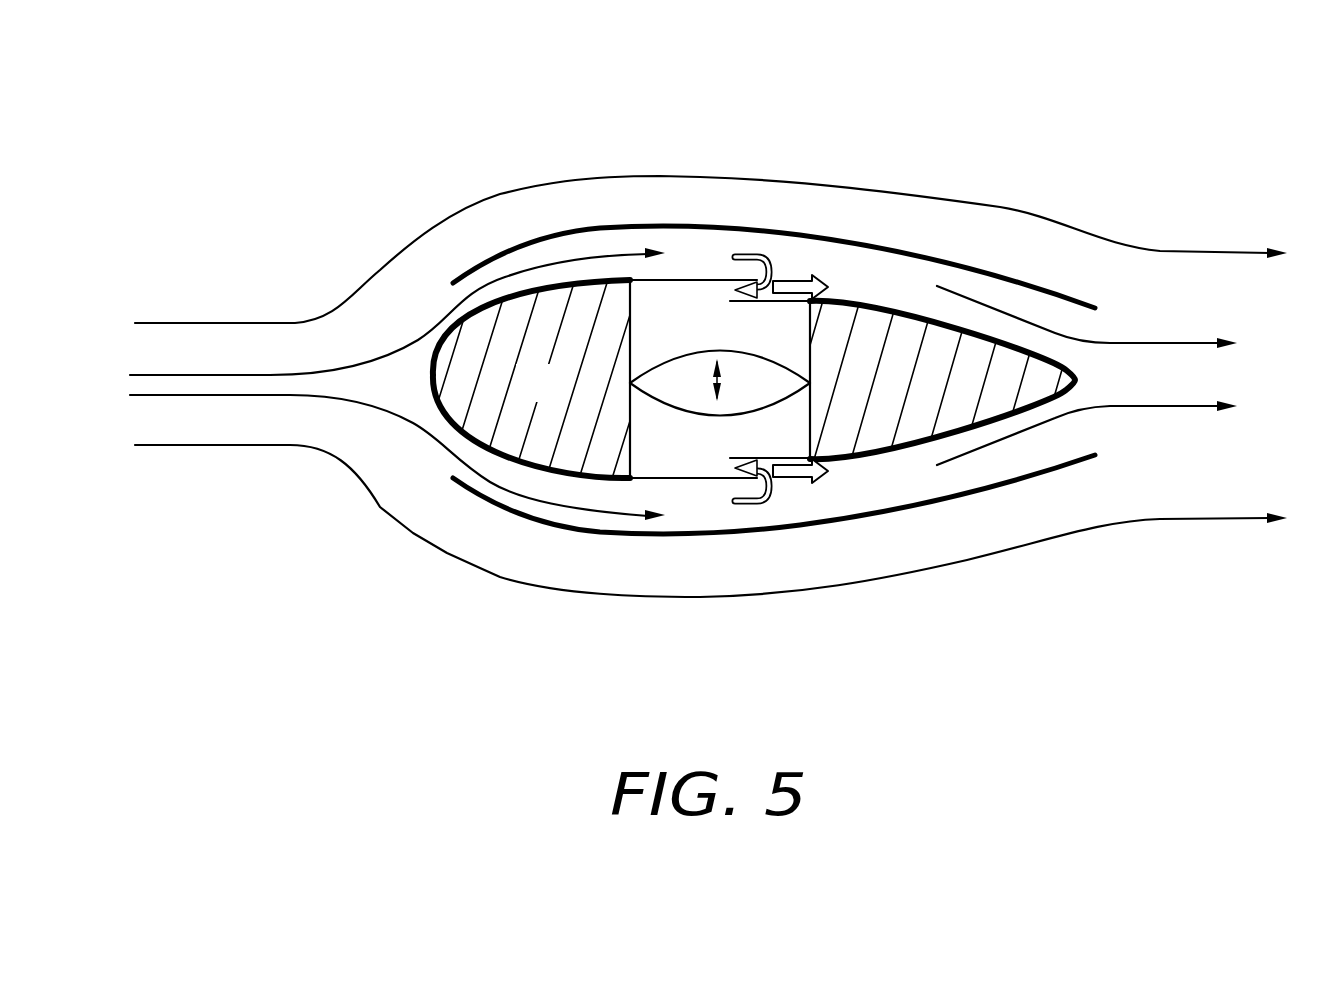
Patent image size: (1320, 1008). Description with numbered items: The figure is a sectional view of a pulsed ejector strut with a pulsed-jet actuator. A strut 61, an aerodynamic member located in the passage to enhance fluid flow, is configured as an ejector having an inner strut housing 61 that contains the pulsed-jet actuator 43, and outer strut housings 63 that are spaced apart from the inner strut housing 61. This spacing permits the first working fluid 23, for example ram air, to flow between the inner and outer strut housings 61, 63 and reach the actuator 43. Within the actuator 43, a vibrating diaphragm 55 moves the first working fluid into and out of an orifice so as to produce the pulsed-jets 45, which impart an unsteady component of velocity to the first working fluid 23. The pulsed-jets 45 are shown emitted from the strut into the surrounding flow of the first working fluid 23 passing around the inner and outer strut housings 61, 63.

The first working fluid 23 is at (687, 386).
The actuator 43 is at (612, 397).
The pulsed-jets 45 is at (793, 280).
The vibrating diaphragm 55 is at (711, 347).
The inner strut housing 61 is at (460, 430).
The outer strut housing 63 is at (668, 223).